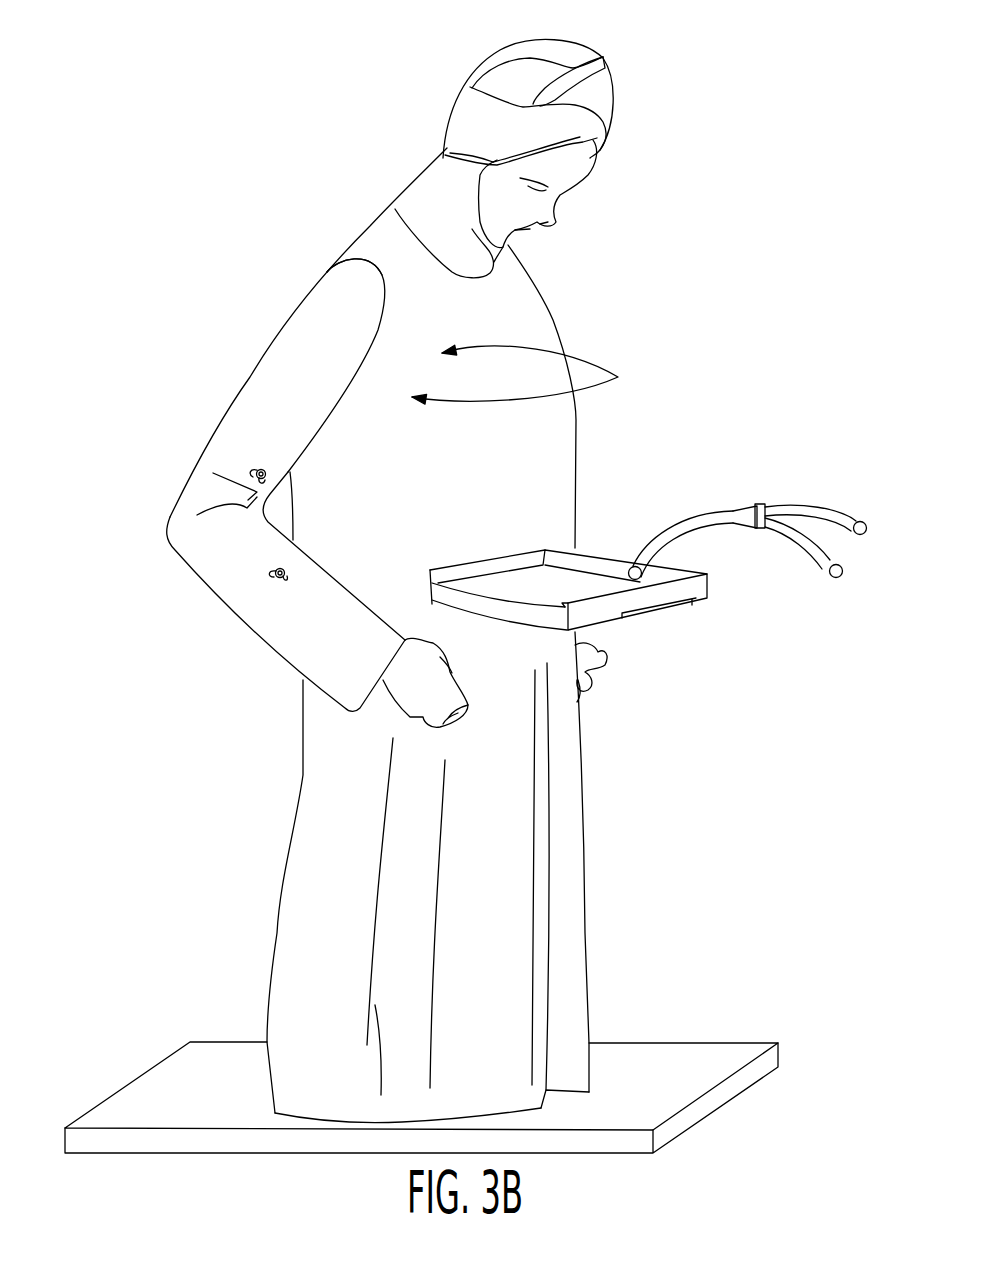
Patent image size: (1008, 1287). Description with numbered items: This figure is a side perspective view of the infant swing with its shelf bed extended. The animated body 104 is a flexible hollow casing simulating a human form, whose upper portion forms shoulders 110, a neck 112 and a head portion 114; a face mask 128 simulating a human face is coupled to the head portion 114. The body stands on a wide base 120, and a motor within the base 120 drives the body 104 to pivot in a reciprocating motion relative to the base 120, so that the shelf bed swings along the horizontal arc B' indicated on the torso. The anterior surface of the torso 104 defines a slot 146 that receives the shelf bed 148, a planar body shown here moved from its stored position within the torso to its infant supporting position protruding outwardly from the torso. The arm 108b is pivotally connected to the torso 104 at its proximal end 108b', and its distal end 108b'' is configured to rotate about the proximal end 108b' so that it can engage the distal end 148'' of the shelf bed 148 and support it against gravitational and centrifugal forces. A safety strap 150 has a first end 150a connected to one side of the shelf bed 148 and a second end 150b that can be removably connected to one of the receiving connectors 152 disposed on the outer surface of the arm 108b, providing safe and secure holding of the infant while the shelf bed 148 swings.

The animated body 104 is at (557, 473).
The arm 108b is at (241, 591).
The proximal end of arm 108b' is at (296, 332).
The distal end of arm 108b'' is at (386, 877).
The shoulders 110 is at (380, 245).
The neck 112 is at (425, 203).
The head portion 114 is at (600, 90).
The base 120 is at (718, 1055).
The face mask 128 is at (573, 167).
The slot 146 is at (567, 543).
The shelf bed 148 is at (666, 514).
The distal end of shelf bed 148'' is at (648, 636).
The safety strap 150 is at (803, 505).
The first end of safety strap 150a is at (635, 580).
The second end of safety strap 150b is at (858, 537).
The receiving connector 152 is at (257, 477).
The horizontal arc B' is at (544, 342).